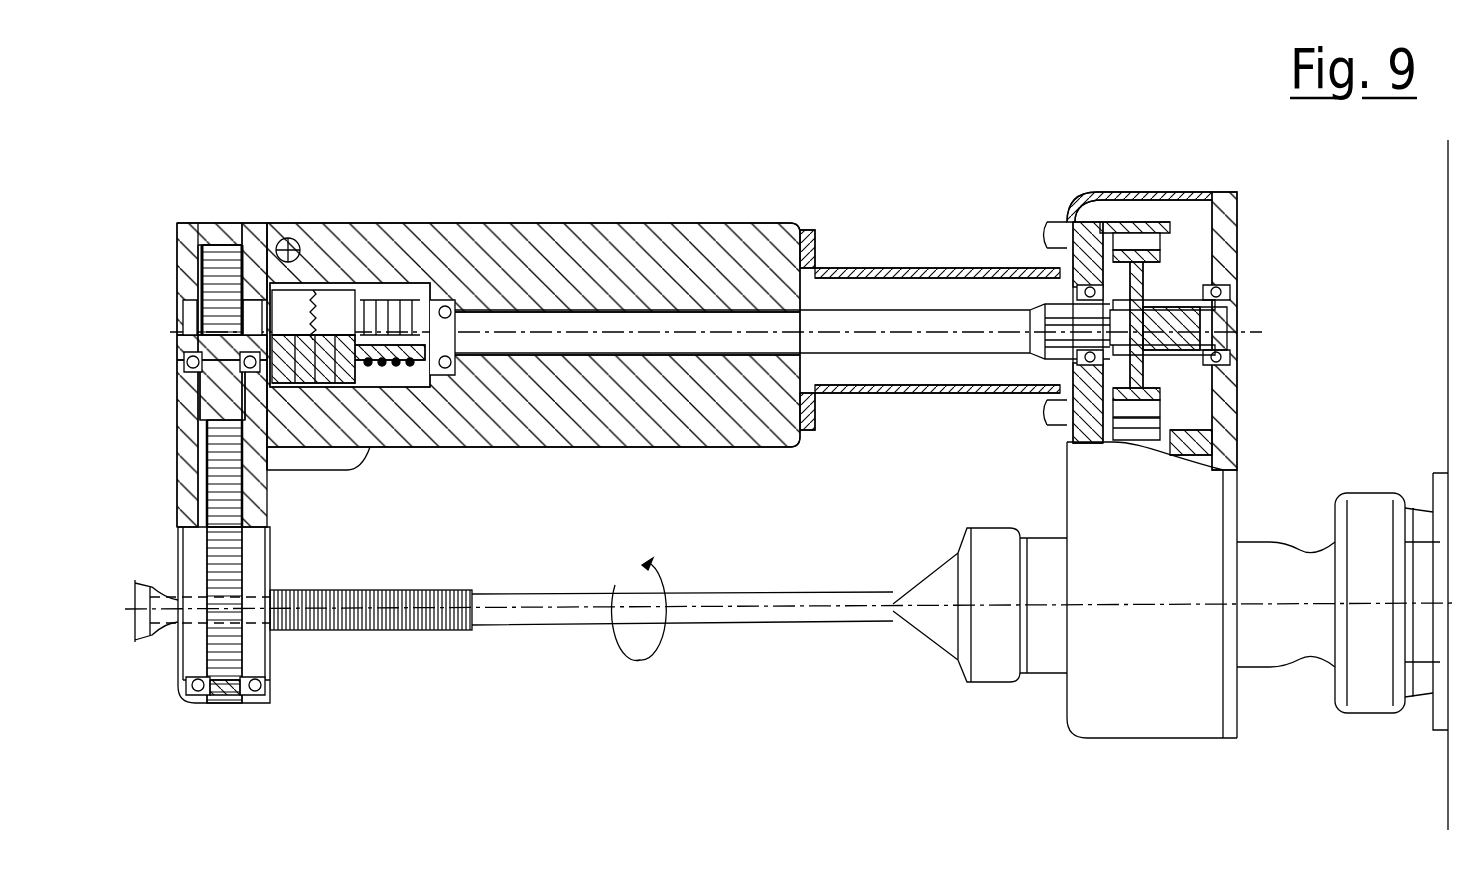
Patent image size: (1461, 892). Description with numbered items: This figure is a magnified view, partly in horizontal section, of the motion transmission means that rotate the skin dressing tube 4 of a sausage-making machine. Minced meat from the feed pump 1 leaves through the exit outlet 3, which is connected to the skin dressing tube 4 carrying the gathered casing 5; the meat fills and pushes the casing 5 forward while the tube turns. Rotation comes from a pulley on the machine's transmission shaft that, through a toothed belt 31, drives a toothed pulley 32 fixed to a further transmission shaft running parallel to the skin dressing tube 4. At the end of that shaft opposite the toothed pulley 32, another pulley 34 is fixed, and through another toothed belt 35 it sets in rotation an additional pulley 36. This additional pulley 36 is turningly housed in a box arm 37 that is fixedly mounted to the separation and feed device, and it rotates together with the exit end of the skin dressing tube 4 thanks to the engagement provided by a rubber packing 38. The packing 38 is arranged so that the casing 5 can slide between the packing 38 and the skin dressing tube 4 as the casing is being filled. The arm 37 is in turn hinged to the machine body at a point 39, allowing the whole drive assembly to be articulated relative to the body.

The feed pump 1 is at (1448, 325).
The exit outlet 3 is at (1383, 695).
The skin dressing tube 4 is at (516, 616).
The gathered casing 5 is at (378, 618).
The toothed belt 31 is at (1137, 445).
The toothed pulley 32 is at (1222, 196).
The pulley 34 is at (218, 282).
The toothed belt 35 is at (222, 487).
The additional pulley 36 is at (227, 657).
The box arm 37 is at (190, 233).
The rubber packing 38 is at (557, 232).
The hinge point 39 is at (292, 240).